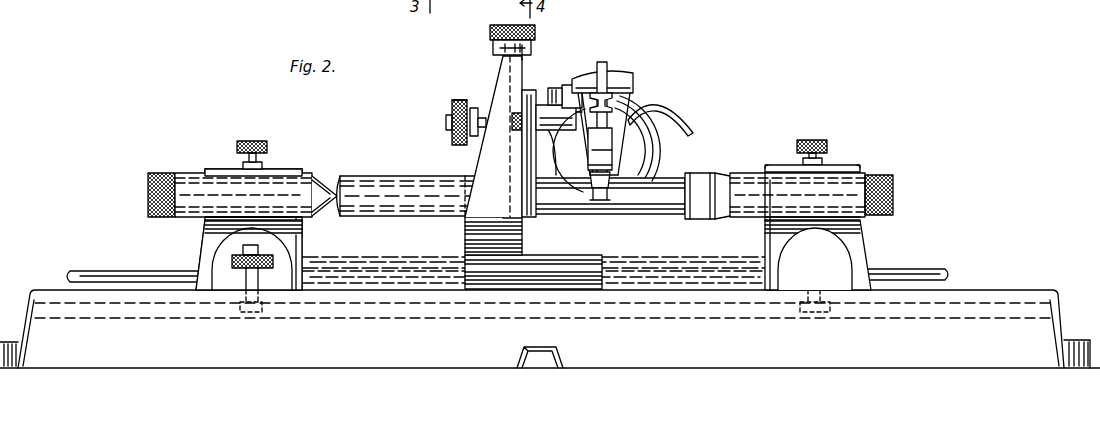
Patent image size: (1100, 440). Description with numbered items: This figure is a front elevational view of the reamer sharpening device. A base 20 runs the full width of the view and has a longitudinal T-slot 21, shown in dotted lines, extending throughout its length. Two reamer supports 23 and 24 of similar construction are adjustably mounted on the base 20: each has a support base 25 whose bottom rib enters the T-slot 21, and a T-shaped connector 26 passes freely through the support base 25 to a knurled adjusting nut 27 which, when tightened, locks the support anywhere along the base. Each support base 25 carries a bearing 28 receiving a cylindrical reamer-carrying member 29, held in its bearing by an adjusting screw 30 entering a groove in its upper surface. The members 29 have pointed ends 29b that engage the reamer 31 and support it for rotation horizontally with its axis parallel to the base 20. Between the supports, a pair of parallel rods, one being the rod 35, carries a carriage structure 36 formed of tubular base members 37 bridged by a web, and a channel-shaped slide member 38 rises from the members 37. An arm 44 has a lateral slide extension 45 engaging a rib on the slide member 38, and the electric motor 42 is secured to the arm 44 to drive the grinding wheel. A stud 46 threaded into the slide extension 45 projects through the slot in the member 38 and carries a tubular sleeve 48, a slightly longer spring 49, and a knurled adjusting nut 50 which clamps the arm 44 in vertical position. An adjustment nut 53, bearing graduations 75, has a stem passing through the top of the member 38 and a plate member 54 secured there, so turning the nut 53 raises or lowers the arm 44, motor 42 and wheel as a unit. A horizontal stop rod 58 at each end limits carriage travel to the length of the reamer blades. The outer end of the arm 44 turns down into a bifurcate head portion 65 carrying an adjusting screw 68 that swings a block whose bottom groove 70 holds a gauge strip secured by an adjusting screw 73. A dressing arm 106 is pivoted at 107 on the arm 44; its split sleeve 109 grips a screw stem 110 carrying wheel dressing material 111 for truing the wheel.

The base 20 is at (468, 360).
The longitudinal T-slot 21 is at (88, 318).
The reamer support 23 is at (869, 168).
The reamer support 24 is at (212, 162).
The support base 25 is at (212, 284).
The connector 26 is at (252, 313).
The adjusting nut 27 is at (232, 259).
The bearing 28 is at (228, 175).
The reamer-carrying member 29 is at (148, 197).
The pointed end 29b is at (325, 181).
The adjusting screw 30 is at (254, 141).
The reamer 31 is at (388, 214).
The rod 35 is at (400, 268).
The carriage structure 36 is at (524, 290).
The tubular base member 37 is at (566, 258).
The slide member 38 is at (468, 160).
The electric motor 42 is at (612, 163).
The arm 44 is at (617, 81).
The slide extension 45 is at (529, 92).
The stud 46 is at (446, 123).
The tubular sleeve 48 is at (471, 116).
The spring 49 is at (474, 108).
The adjusting nut 50 is at (452, 105).
The adjustment nut 53 is at (505, 26).
The plate member 54 is at (520, 56).
The rod 58 is at (73, 270).
The bifurcate head portion 65 is at (607, 156).
The adjusting screw 68 is at (612, 102).
The groove 70 is at (640, 168).
The adjusting screw 73 is at (598, 193).
The graduations 75 is at (524, 46).
The arm 106 is at (557, 131).
The pivot 107 is at (552, 92).
The split 109 is at (548, 122).
The screw stem 110 is at (514, 114).
The wheel dressing material 111 is at (594, 118).